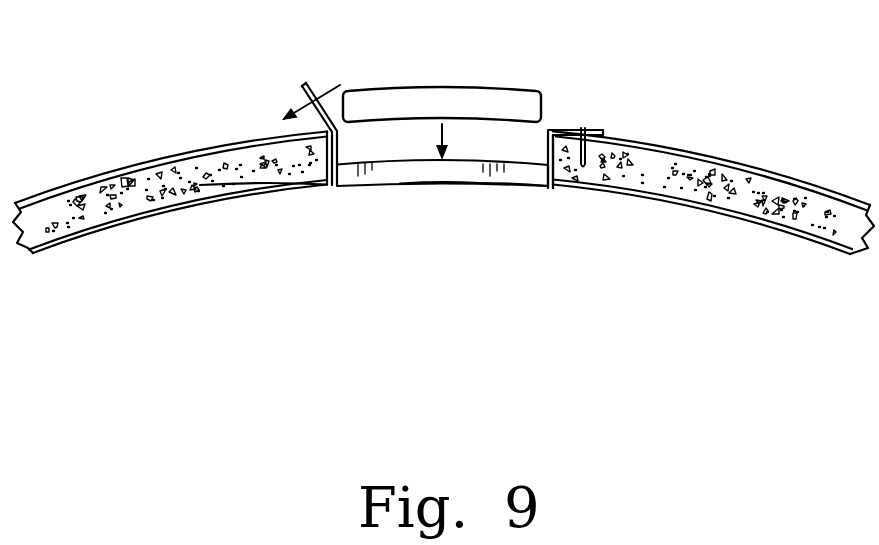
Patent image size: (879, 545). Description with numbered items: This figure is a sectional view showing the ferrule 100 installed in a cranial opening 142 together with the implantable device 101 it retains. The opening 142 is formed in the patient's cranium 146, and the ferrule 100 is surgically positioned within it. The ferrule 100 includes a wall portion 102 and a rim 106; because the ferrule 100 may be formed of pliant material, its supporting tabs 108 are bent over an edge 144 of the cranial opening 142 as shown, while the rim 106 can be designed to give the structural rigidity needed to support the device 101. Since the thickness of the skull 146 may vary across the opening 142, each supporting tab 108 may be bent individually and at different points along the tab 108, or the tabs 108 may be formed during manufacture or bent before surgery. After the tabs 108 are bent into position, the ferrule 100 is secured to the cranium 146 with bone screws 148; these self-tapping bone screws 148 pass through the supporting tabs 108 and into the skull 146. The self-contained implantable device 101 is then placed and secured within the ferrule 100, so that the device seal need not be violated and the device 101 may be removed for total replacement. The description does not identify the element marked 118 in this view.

The ferrule 100 is at (502, 205).
The implantable device 101 is at (408, 97).
The wall portion 102 is at (402, 172).
The rim 106 is at (525, 162).
The supporting tab 108 is at (320, 85).
The underside of cover plate 118 is at (452, 188).
The cranial opening 142 is at (295, 187).
The edge 144 is at (322, 136).
The cranium 146 is at (690, 147).
The bone screws 148 is at (586, 168).